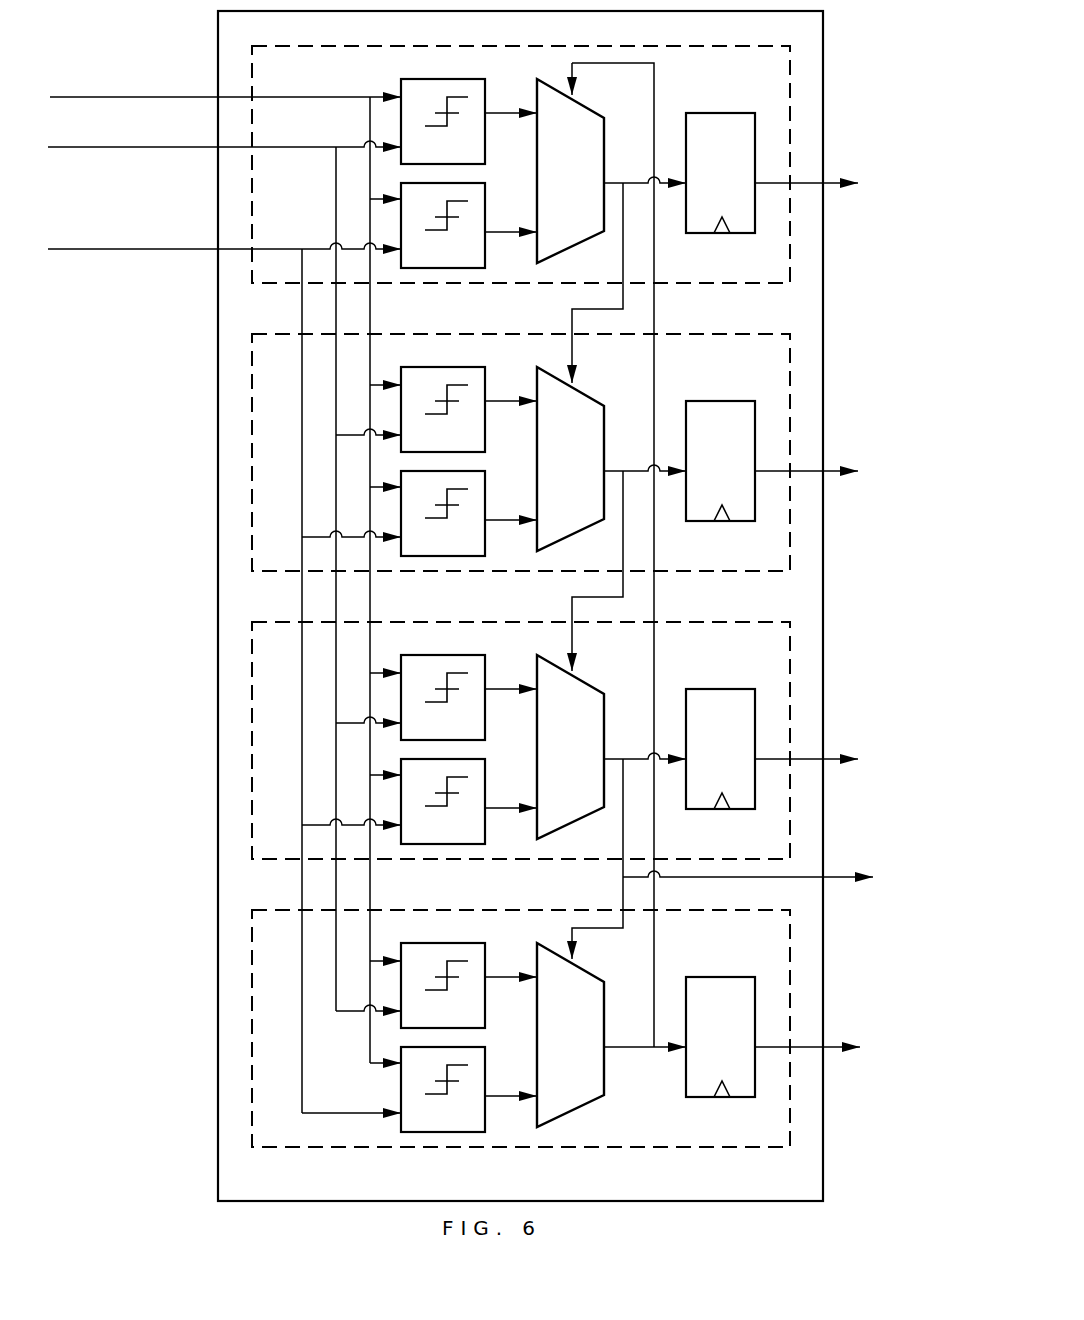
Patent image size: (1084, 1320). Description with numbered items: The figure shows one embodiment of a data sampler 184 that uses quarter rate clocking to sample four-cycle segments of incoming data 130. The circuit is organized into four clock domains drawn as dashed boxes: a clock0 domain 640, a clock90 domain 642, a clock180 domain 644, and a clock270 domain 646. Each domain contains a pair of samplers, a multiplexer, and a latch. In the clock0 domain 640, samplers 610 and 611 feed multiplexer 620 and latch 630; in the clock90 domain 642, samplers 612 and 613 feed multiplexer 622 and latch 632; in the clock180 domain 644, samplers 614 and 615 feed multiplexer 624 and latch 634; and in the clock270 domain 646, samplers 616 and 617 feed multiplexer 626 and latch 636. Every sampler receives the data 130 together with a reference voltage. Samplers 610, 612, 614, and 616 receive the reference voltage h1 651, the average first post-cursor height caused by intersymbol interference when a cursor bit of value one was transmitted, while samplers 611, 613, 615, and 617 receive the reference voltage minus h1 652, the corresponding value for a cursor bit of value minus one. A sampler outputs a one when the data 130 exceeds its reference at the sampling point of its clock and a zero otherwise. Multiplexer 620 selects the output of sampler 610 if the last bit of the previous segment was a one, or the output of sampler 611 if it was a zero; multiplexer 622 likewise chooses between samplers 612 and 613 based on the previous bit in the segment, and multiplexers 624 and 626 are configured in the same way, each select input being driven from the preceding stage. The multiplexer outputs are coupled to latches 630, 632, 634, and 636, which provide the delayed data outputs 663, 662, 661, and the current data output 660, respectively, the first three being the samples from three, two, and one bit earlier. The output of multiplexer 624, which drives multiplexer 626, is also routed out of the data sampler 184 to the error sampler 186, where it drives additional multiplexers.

The data 130 is at (225, 567).
The h1 651 is at (224, 567).
The −h1 652 is at (224, 669).
The sampler 610 is at (426, 155).
The sampler 611 is at (426, 259).
The sampler 612 is at (443, 409).
The sampler 613 is at (443, 513).
The sampler 614 is at (443, 697).
The sampler 615 is at (443, 801).
The sampler 616 is at (443, 985).
The sampler 617 is at (443, 1089).
The multiplexer 620 is at (570, 171).
The multiplexer 622 is at (570, 459).
The multiplexer 624 is at (570, 747).
The multiplexer 626 is at (570, 1035).
The latch 630 is at (703, 184).
The latch 632 is at (720, 461).
The latch 634 is at (720, 749).
The latch 636 is at (720, 1037).
The clock0 domain 640 is at (726, 75).
The clock90 domain 642 is at (521, 452).
The clock180 domain 644 is at (521, 740).
The clock270 domain 646 is at (521, 1028).
The D(k) 660 is at (836, 1026).
The D(k−1) 661 is at (840, 737).
The D(k−2) 662 is at (840, 458).
The D(k−3) 663 is at (840, 170).
The error sampler 186 is at (786, 876).
The data sampler 184 is at (596, 1190).